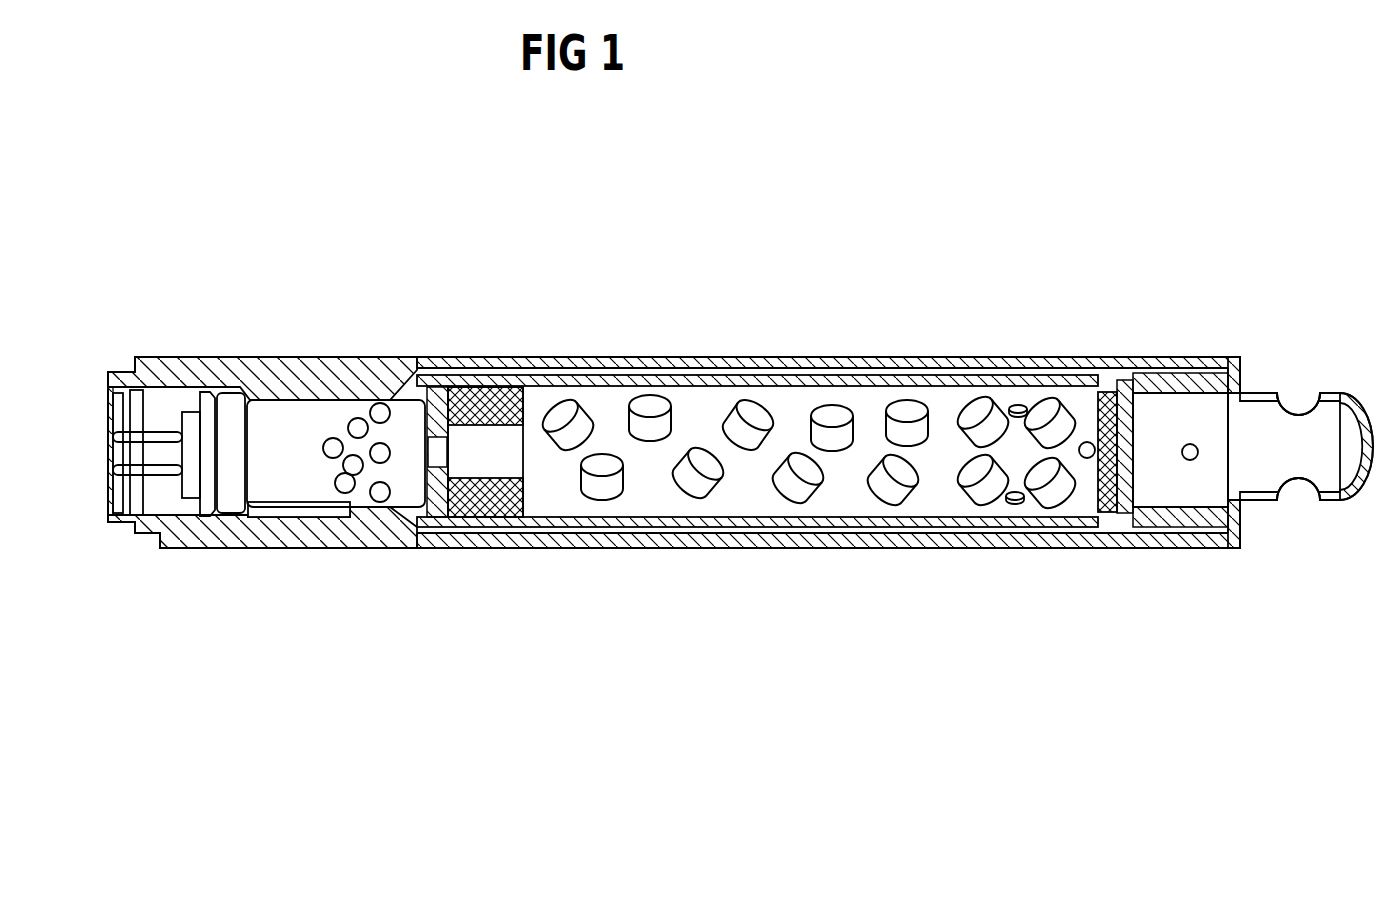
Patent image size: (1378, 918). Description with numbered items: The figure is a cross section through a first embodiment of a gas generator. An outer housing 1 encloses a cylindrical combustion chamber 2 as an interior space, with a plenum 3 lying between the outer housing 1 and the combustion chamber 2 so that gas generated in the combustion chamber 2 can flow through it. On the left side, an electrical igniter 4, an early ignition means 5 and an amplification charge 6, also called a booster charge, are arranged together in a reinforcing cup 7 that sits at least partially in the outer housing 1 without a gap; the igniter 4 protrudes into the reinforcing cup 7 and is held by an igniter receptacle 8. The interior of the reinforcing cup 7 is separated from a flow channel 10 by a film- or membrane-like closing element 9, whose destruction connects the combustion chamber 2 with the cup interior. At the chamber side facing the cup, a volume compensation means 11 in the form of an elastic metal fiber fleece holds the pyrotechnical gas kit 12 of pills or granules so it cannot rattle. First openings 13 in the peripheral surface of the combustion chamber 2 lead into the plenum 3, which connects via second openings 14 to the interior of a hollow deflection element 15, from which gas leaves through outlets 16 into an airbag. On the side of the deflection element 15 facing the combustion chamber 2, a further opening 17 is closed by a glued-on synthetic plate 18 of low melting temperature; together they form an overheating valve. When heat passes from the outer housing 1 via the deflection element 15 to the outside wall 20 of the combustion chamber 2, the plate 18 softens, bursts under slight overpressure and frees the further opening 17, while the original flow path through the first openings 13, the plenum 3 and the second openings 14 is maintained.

The outer housing 1 is at (740, 463).
The combustion chamber 2 is at (660, 500).
The plenum 3 is at (705, 375).
The electrical igniter 4 is at (207, 510).
The early ignition means 5 is at (285, 505).
The amplification charge 6 is at (380, 492).
The reinforcing cup 7 is at (267, 382).
The igniter receptacle 8 is at (143, 520).
The closing element 9 is at (430, 447).
The flow channel 10 is at (467, 455).
The volume compensation means 11 is at (503, 507).
The pyrotechnical gas kit 12 is at (652, 425).
The first openings 13 is at (1019, 405).
The second openings 14 is at (1190, 383).
The deflection element 15 is at (1160, 517).
The outlets 16 is at (1303, 402).
The further opening 17 is at (1127, 453).
The plate 18 is at (1108, 392).
The outside wall 20 is at (783, 382).